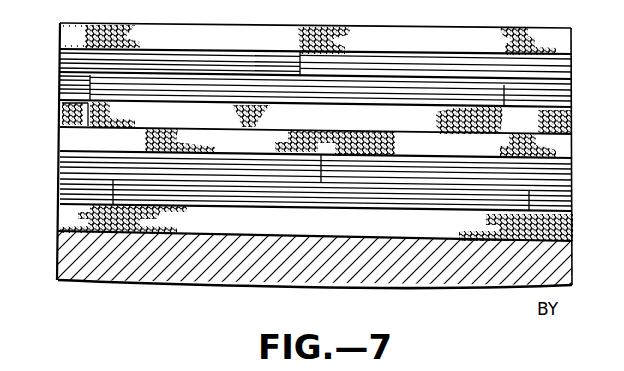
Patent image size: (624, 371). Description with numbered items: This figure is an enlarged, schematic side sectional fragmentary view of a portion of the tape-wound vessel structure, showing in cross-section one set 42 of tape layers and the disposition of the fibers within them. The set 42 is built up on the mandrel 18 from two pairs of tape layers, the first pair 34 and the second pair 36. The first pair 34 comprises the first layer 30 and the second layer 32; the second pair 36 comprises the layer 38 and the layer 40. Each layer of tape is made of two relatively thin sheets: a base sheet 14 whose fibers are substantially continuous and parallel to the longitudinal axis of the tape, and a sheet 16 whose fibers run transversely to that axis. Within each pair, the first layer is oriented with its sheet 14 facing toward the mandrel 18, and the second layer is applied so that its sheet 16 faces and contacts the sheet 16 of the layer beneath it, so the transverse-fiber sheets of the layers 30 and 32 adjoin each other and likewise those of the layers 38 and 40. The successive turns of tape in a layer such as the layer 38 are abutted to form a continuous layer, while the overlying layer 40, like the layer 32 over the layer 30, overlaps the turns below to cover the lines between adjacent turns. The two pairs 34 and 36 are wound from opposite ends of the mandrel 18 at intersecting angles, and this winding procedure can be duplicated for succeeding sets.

The base sheet 14 is at (266, 33).
The sheet of transverse fibers 16 is at (174, 57).
The mandrel 18 is at (106, 258).
The first layer 30 is at (551, 214).
The second layer 32 is at (559, 159).
The first pair 34 is at (50, 137).
The second pair 36 is at (50, 18).
The first layer of second pair 38 is at (573, 112).
The second layer of second pair 40 is at (557, 53).
The set 42 is at (95, 126).